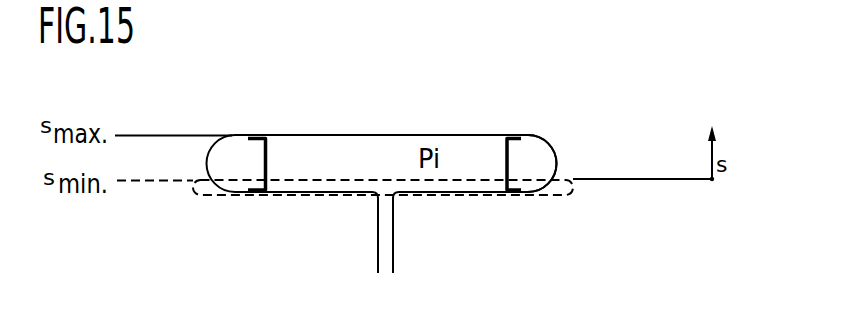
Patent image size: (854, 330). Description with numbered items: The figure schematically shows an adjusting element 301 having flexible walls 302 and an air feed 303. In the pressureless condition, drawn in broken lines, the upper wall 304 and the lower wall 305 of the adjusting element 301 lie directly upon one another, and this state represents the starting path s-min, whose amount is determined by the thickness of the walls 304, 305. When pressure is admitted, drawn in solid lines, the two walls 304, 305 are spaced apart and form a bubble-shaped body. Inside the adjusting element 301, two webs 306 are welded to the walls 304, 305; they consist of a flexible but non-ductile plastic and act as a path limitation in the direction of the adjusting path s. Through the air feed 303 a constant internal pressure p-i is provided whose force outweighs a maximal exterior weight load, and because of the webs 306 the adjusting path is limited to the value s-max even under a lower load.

The adjusting element 301 is at (352, 117).
The flexible walls 302 is at (547, 138).
The air feed 303 is at (388, 242).
The upper wall 304 is at (395, 133).
The lower wall 305 is at (465, 194).
The webs 306 is at (498, 160).